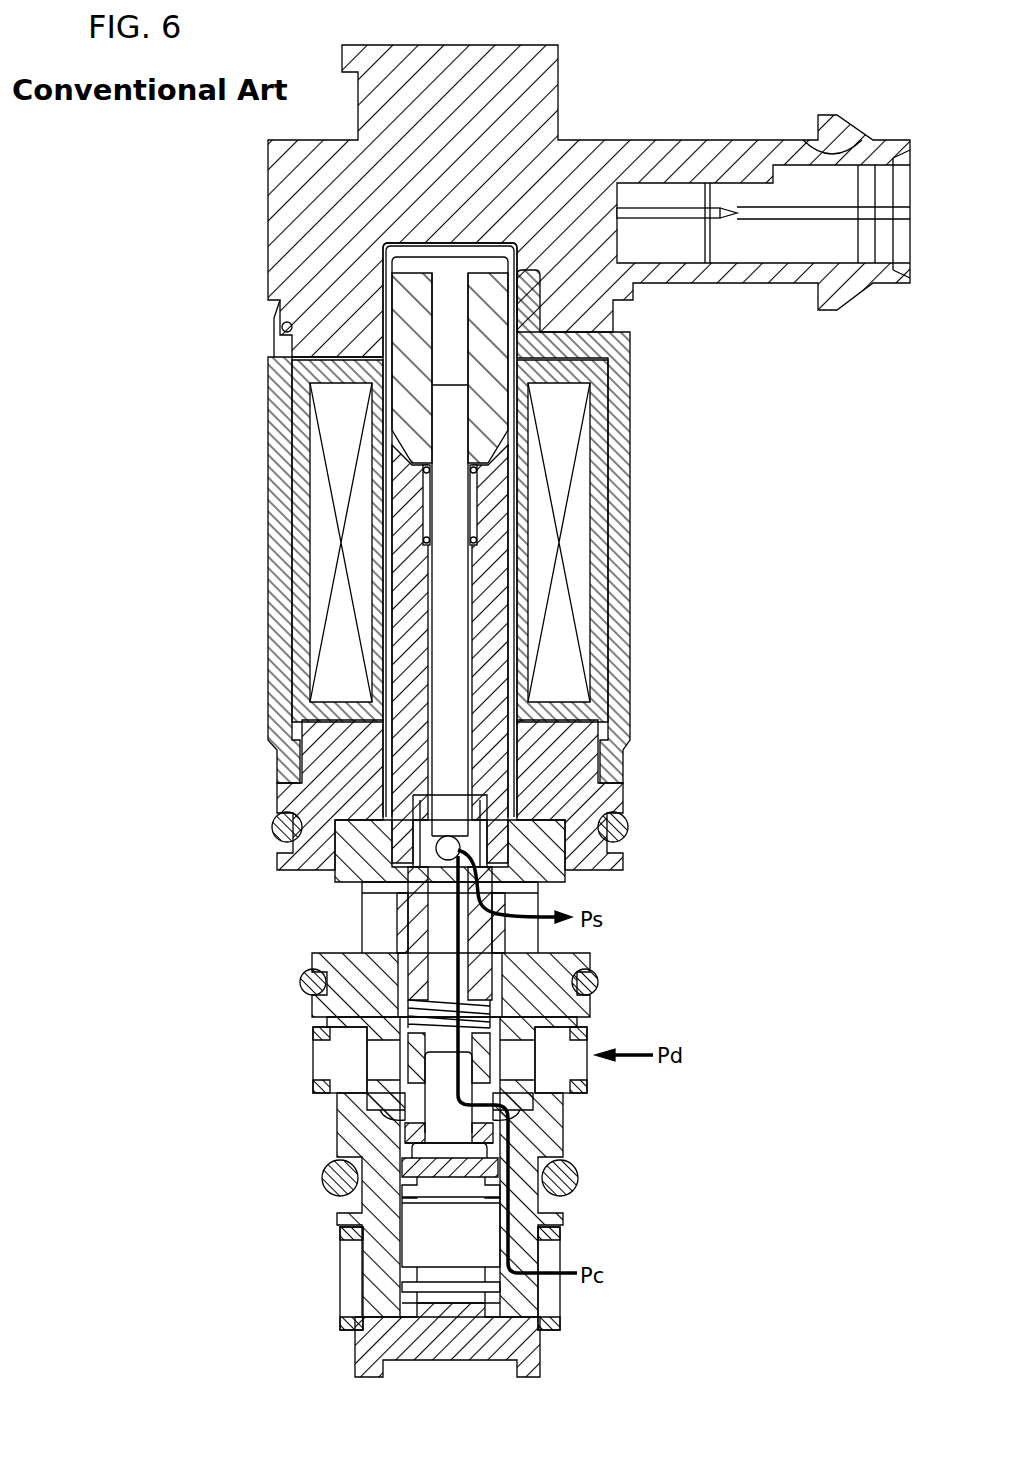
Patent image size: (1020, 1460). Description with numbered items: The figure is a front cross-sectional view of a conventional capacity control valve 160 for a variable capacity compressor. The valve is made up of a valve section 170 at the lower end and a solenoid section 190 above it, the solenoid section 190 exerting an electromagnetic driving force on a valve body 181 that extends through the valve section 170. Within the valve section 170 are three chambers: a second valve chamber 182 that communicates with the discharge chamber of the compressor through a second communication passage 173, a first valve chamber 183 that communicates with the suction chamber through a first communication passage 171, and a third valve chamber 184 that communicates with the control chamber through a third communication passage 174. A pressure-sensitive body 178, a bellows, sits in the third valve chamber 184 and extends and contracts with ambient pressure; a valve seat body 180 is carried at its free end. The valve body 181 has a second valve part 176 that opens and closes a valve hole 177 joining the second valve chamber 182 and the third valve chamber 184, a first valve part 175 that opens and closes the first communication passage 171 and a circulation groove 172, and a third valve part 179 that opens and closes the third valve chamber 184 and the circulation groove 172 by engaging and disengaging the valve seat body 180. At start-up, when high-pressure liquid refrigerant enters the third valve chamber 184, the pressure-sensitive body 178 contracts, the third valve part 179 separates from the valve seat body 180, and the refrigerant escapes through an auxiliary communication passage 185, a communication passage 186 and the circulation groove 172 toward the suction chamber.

The capacity control valve 160 is at (760, 442).
The solenoid section 190 is at (250, 462).
The first communication passage 171 is at (527, 892).
The first valve part 175 is at (412, 877).
The circulation groove 172 is at (440, 918).
The first valve chamber 183 is at (495, 935).
The valve body 181 is at (407, 957).
The valve section 170 is at (500, 1161).
The second valve chamber 182 is at (500, 1042).
The second valve part 176 is at (545, 1082).
The second communication passage 173 is at (505, 1062).
The communication passage 186 is at (440, 1065).
The valve hole 177 is at (405, 1107).
The third valve part 179 is at (430, 1128).
The auxiliary communication passage 185 is at (500, 1102).
The valve seat body 180 is at (325, 1187).
The pressure-sensitive body 178 is at (410, 1203).
The third valve chamber 184 is at (393, 1288).
The third communication passage 174 is at (530, 1300).